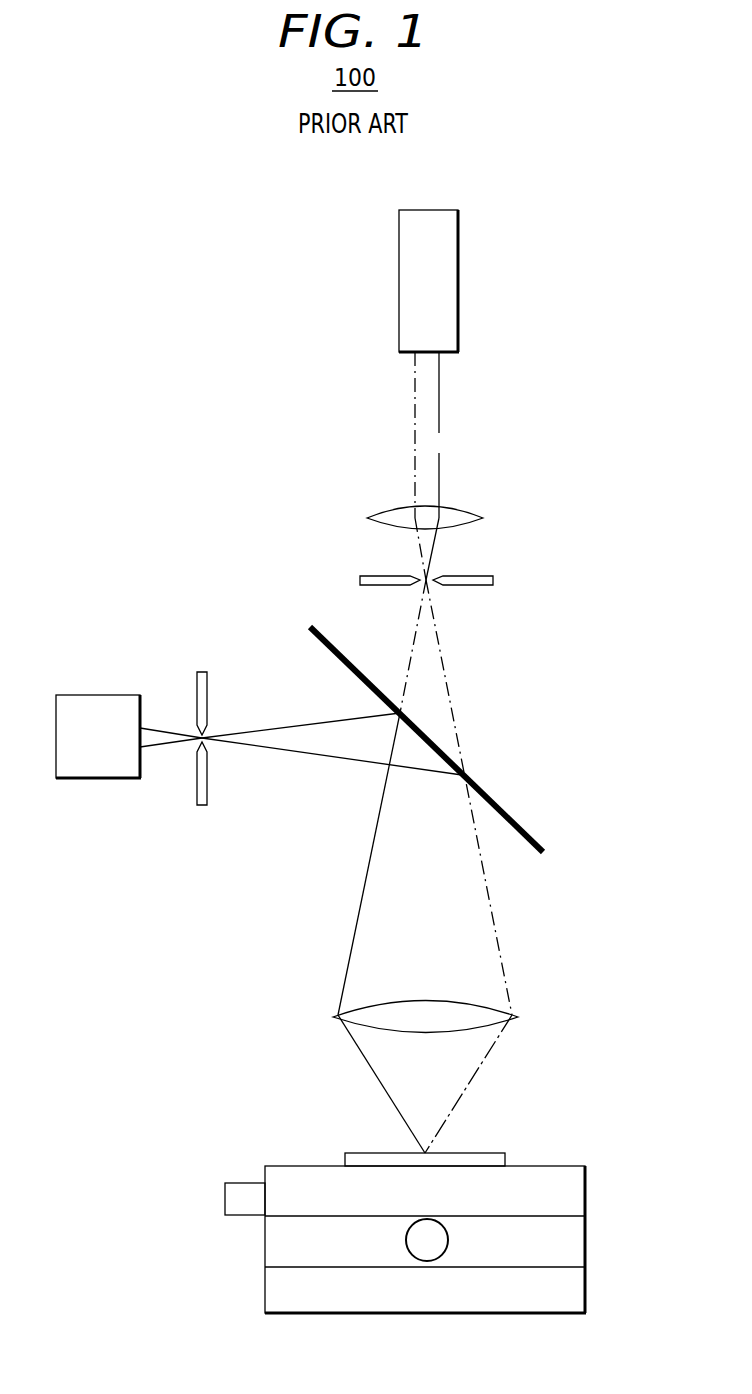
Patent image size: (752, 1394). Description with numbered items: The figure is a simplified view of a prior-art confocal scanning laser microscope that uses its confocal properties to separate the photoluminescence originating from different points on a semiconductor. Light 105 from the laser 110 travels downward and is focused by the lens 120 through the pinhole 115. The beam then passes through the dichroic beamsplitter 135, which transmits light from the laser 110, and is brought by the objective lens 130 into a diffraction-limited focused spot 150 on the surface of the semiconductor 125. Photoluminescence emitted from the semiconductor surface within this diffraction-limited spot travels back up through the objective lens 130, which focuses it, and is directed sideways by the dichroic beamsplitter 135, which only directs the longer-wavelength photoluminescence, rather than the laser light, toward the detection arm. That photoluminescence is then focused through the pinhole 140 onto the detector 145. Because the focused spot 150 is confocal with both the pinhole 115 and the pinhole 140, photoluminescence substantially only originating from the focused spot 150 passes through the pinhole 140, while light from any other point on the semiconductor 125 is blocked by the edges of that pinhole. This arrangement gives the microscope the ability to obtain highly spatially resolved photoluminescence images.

The light 105 is at (439, 443).
The laser 110 is at (458, 284).
The pinhole 115 is at (493, 580).
The lens 120 is at (483, 518).
The semiconductor 125 is at (490, 1153).
The objective lens 130 is at (518, 1017).
The dichroic beamsplitter 135 is at (543, 848).
The pinhole 140 is at (205, 668).
The detector 145 is at (95, 782).
The focused spot 150 is at (425, 1152).